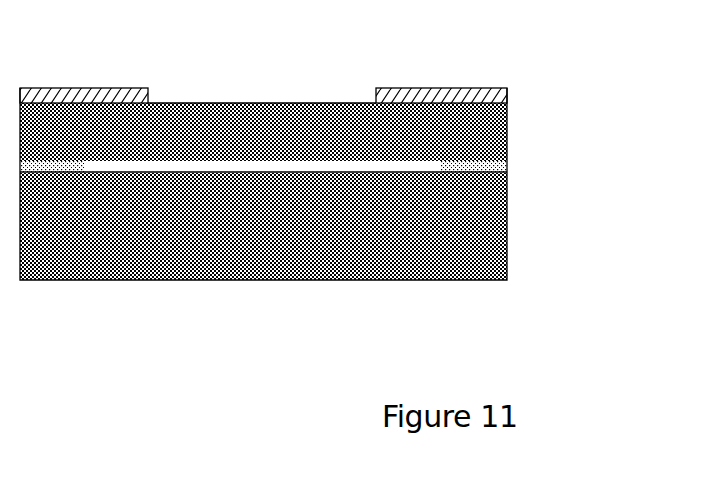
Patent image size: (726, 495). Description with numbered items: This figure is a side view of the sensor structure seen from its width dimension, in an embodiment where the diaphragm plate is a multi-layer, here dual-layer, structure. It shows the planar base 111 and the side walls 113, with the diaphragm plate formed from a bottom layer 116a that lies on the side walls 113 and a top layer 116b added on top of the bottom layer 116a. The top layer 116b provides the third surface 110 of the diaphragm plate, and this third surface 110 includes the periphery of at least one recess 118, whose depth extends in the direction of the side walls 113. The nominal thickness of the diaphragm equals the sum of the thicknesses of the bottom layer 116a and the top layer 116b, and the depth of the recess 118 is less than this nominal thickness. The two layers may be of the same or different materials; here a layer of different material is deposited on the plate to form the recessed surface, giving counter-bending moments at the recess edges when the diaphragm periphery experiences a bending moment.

The third surface 110 is at (418, 83).
The planar base 111 is at (490, 272).
The side walls 113 is at (506, 183).
The bottom layer 116a is at (506, 148).
The top layer 116b is at (506, 108).
The recess 118 is at (291, 92).